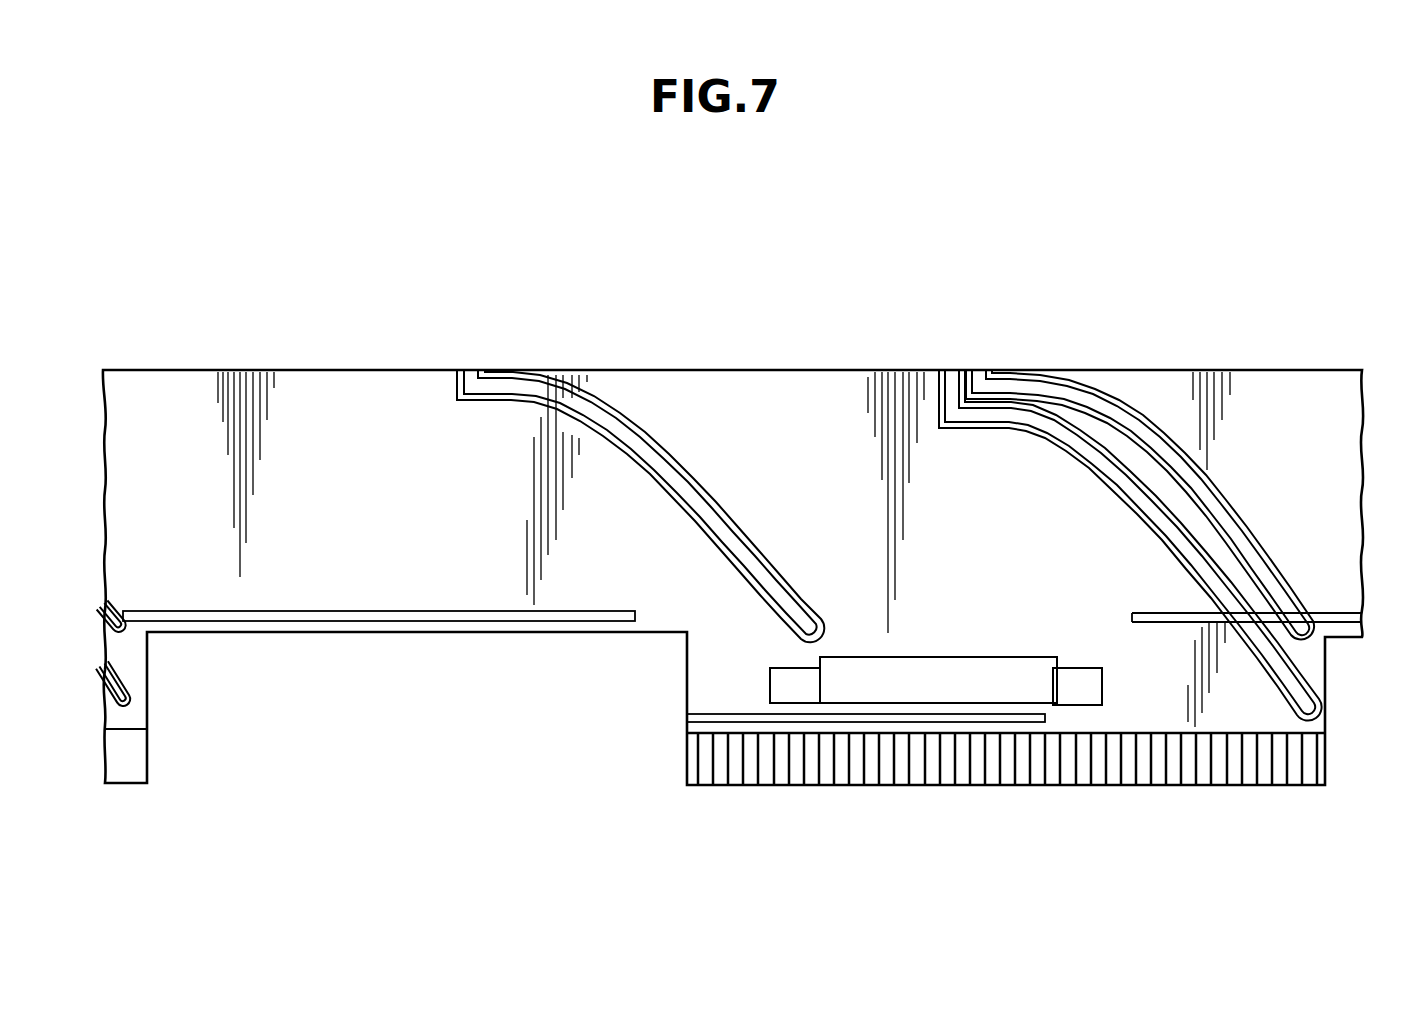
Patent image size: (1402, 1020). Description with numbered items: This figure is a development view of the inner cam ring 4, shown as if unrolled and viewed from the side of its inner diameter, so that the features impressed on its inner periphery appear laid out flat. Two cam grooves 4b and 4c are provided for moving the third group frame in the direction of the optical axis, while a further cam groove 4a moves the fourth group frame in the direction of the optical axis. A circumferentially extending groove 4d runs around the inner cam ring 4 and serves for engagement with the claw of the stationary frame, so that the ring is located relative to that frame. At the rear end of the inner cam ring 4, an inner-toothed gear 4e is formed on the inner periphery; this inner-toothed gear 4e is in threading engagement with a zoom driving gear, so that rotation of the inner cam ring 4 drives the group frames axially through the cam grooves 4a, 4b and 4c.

The inner cam ring 4 is at (836, 416).
The cam groove 4a is at (1152, 530).
The cam groove 4b is at (1200, 522).
The cam groove 4c is at (749, 546).
The circumferentially extending groove 4d is at (440, 614).
The inner-toothed gear 4e is at (1037, 773).